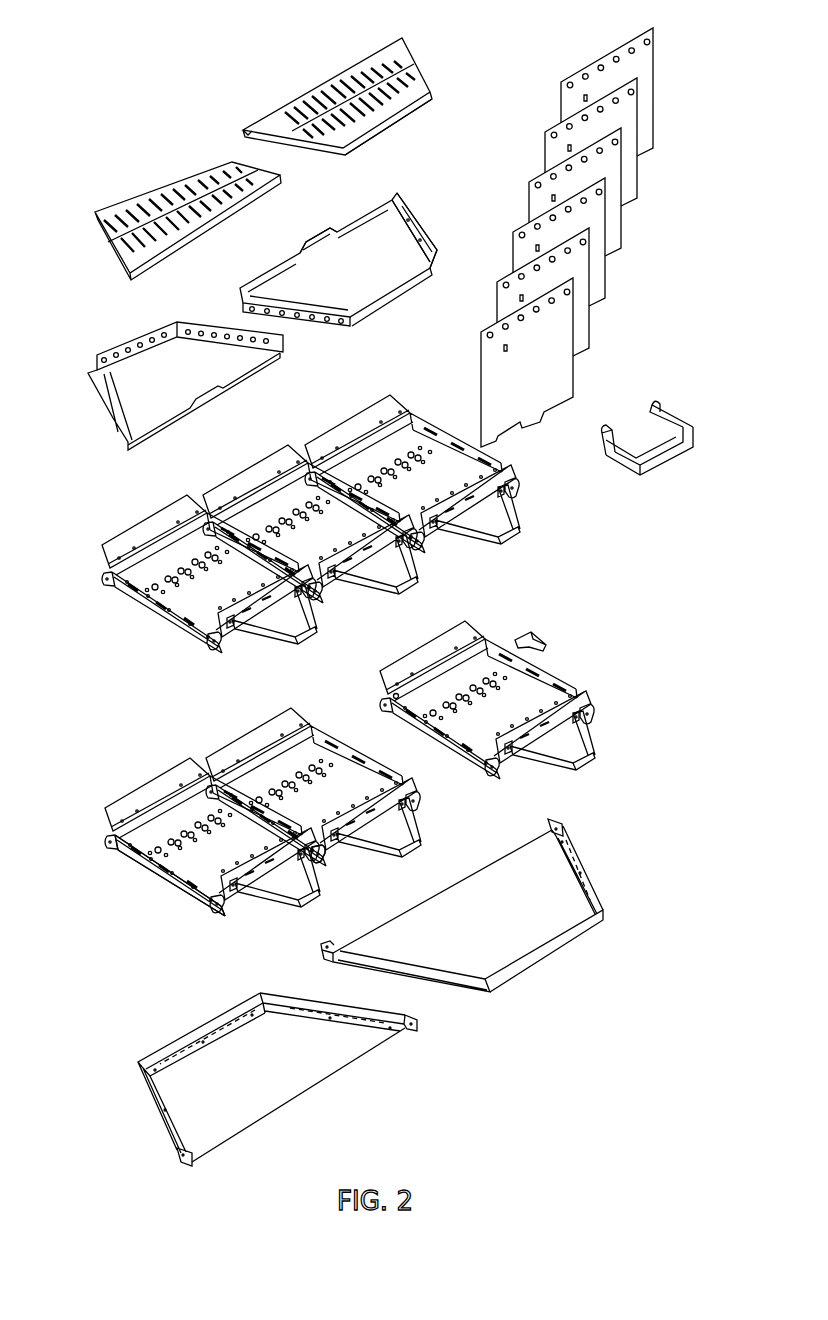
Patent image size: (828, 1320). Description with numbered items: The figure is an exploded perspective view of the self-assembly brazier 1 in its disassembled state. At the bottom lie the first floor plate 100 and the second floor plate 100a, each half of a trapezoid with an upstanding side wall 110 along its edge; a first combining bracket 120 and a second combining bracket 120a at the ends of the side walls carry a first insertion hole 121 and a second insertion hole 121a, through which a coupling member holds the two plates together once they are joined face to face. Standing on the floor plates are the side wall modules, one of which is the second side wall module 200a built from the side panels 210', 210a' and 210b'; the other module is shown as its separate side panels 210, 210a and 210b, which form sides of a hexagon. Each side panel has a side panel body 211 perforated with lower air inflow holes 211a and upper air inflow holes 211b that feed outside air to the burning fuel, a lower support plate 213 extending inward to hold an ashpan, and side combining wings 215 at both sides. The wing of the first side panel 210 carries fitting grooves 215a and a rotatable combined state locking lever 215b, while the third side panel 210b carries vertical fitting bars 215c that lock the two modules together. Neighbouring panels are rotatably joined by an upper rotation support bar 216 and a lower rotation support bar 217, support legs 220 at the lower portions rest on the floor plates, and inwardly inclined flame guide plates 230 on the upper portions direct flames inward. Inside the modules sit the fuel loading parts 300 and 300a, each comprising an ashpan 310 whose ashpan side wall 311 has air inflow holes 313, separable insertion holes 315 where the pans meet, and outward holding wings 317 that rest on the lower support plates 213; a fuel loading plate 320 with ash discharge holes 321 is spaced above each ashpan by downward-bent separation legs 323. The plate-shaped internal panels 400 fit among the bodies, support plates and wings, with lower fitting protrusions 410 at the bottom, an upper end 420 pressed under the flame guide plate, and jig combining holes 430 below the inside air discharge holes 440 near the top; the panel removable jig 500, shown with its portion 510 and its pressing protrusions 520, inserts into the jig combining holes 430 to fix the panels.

The self-assembly brazier 1 is at (44, 114).
The first floor plate 100 is at (273, 1090).
The second floor plate 100a is at (497, 937).
The side wall 110 is at (200, 1028).
The first combining bracket 120 is at (421, 1028).
The second combining bracket 120a is at (321, 956).
The first insertion hole 121 is at (409, 1042).
The second insertion hole 121a is at (327, 947).
The second side wall module 200a is at (79, 552).
The first side panel 210 is at (489, 731).
The second side panel 210a is at (293, 769).
The third side panel 210b is at (187, 813).
The first side panel of second side wall module 210' is at (412, 467).
The second side panel of second side wall module 210a' is at (310, 516).
The third side panel of second side wall module 210b' is at (207, 566).
The side panel body 211 is at (448, 728).
The lower air inflow holes 211a is at (584, 724).
The upper air inflow holes 211b is at (450, 640).
The lower support plate 213 is at (574, 727).
The side combining wing 215 is at (567, 668).
The fitting grooves 215a is at (547, 653).
The combined state locking lever 215b is at (546, 612).
The fitting bars 215c is at (124, 858).
The upper rotation support bar 216 is at (357, 706).
The lower rotation support bar 217 is at (414, 823).
The support legs 220 is at (582, 753).
The flame guide plates 230 is at (449, 695).
The fuel loading part 300 is at (440, 165).
The second housing module 300a is at (74, 228).
The ashpan 310 is at (372, 247).
The ashpan side wall 311 is at (277, 272).
The air inflow holes 313 is at (339, 318).
The separable insertion holes 315 is at (315, 231).
The holding wings 317 is at (441, 220).
The fuel loading plate 320 is at (291, 104).
The ash discharge holes 321 is at (322, 94).
The separation legs 323 is at (390, 127).
The internal panel 400 is at (557, 352).
The lower fitting protrusions 410 is at (528, 425).
The upper end 420 is at (497, 300).
The jig combining holes 430 is at (553, 316).
The inside air discharge holes 440 is at (585, 279).
The panel removable jig 500 is at (668, 462).
The bracket base 510 is at (630, 464).
The pressing protrusions 520 is at (604, 445).